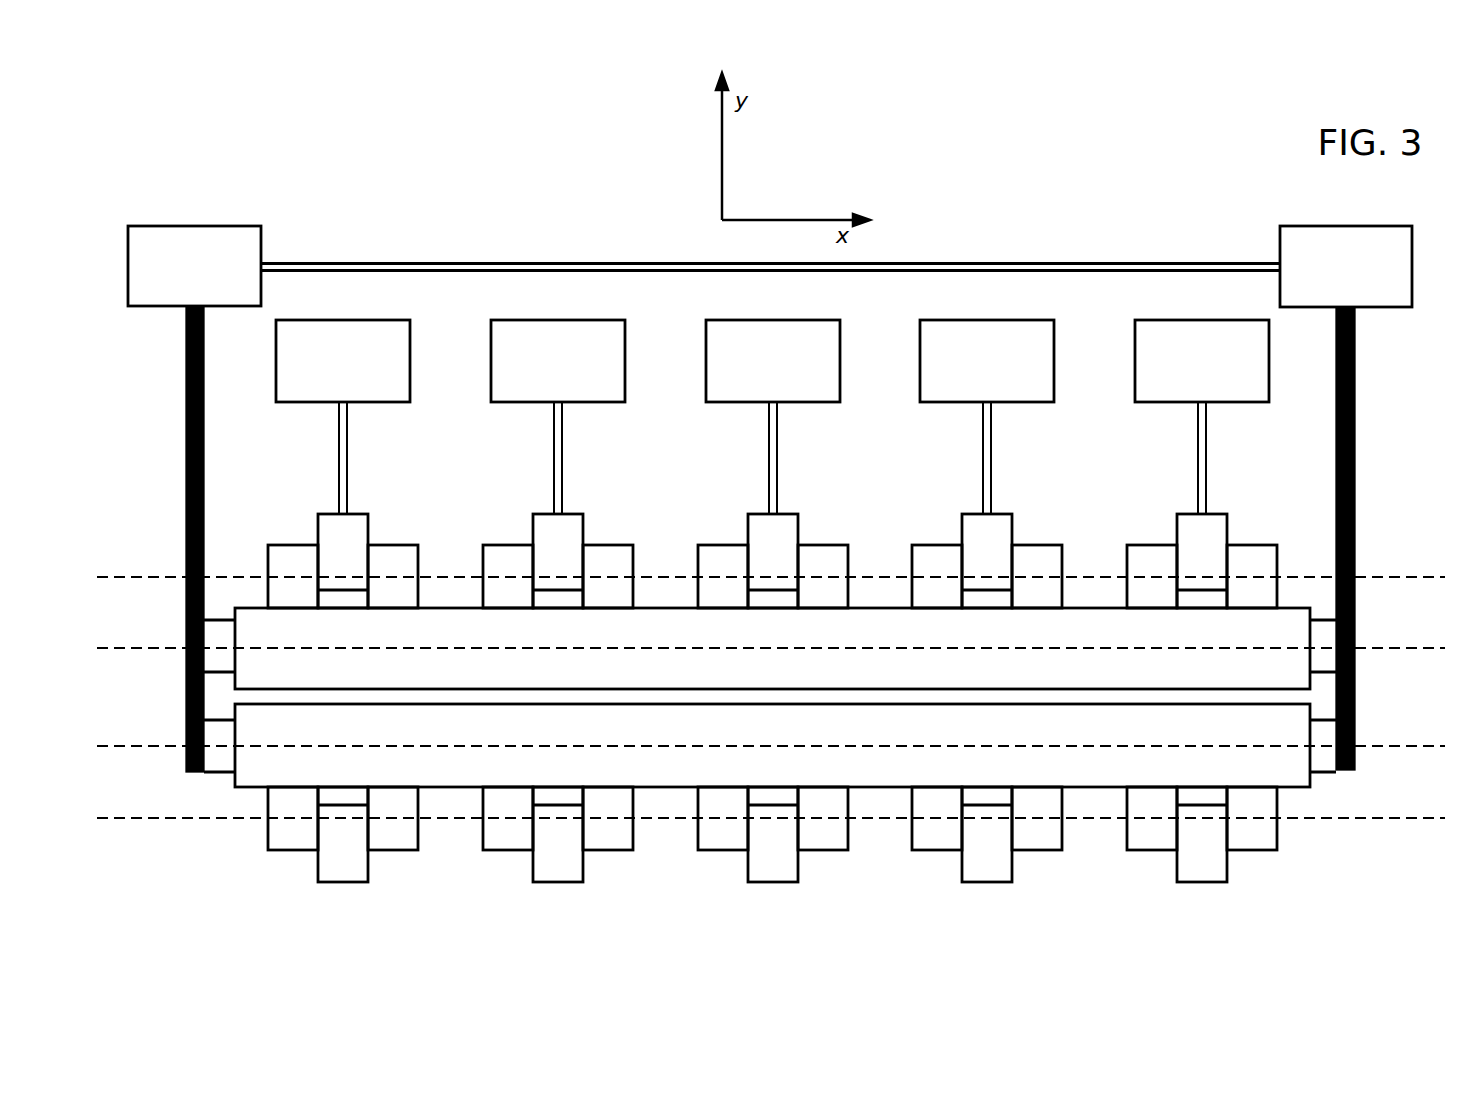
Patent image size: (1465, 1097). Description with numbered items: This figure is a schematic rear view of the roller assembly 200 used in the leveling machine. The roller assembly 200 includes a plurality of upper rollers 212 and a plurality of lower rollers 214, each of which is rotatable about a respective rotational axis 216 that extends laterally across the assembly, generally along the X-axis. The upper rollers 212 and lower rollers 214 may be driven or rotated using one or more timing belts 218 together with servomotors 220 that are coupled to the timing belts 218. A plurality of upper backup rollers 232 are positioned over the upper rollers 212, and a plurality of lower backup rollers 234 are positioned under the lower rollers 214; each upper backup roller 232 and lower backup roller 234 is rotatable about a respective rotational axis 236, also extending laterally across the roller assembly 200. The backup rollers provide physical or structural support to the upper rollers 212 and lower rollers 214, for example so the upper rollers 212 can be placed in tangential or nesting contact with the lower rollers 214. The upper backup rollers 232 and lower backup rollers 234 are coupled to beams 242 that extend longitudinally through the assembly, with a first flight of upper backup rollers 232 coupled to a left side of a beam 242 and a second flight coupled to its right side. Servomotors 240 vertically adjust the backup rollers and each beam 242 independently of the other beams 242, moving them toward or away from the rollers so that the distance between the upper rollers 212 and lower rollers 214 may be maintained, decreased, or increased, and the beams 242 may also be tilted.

The roller assembly 200 is at (190, 151).
The upper roller 212 is at (246, 592).
The lower roller 214 is at (1301, 805).
The rotational axis 216 is at (1372, 648).
The timing belt 218 is at (186, 380).
The servomotor 220 is at (168, 226).
The upper backup roller 232 is at (490, 527).
The lower backup roller 234 is at (265, 865).
The rotational axis 236 is at (1372, 577).
The servomotor 240 is at (380, 320).
The beam 242 is at (322, 514).